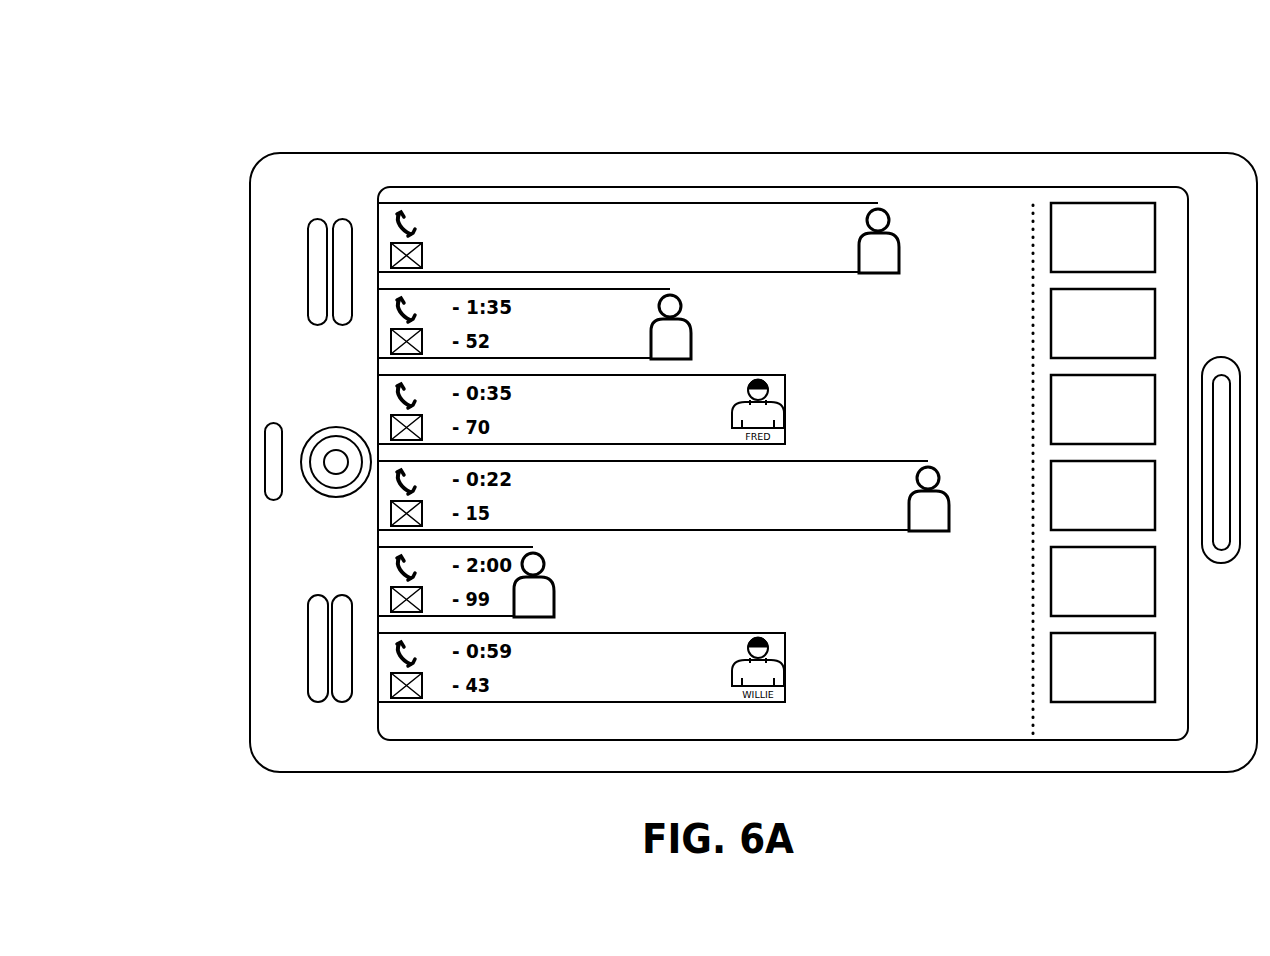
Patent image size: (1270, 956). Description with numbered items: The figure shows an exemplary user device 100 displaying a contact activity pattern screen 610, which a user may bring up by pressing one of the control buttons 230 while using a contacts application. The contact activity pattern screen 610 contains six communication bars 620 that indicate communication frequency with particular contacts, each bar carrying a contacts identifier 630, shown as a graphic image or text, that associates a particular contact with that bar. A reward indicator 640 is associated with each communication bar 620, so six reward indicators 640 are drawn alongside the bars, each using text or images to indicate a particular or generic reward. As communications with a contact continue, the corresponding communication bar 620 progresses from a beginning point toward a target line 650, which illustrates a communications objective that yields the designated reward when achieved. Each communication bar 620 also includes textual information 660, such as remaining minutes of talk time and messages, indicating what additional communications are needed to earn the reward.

The user device 100 is at (249, 84).
The control buttons 230 is at (316, 575).
The contact activity pattern screen 610 is at (413, 171).
The communication bars 620 is at (719, 182).
The contacts identifiers 630 is at (875, 182).
The reward indicators 640 is at (1113, 181).
The target line 650 is at (1029, 182).
The textual information 660 is at (485, 192).